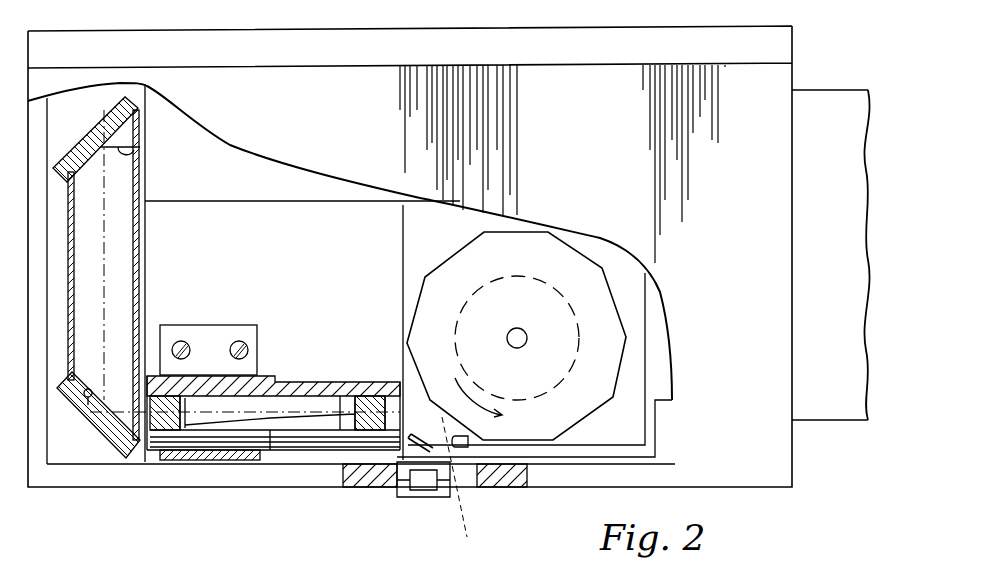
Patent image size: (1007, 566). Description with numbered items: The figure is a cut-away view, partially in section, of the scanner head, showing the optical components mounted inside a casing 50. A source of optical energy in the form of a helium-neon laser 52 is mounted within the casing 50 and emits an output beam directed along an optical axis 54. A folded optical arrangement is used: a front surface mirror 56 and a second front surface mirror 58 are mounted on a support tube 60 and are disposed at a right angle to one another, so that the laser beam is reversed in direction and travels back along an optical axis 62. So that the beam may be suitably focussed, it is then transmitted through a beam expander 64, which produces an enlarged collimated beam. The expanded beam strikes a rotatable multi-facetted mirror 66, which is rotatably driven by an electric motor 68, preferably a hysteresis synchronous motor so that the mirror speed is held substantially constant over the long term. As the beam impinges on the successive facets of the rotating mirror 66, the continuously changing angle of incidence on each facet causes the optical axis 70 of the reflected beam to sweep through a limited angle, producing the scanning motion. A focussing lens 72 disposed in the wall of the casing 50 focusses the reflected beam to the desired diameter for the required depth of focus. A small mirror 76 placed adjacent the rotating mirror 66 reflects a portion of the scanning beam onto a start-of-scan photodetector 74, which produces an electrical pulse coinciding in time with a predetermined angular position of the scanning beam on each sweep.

The casing 50 is at (535, 27).
The helium-neon laser 52 is at (264, 205).
The optical axis 54 is at (140, 152).
The front surface mirror 56 is at (92, 160).
The front surface mirror 58 is at (82, 418).
The support tube 60 is at (137, 251).
The optical axis 62 is at (117, 410).
The beam expander 64 is at (282, 377).
The rotatable multi-facetted mirror 66 is at (602, 268).
The electric motor 68 is at (565, 398).
The optical axis 70 is at (460, 505).
The focussing lens 72 is at (450, 480).
The photodetector 74 is at (467, 447).
The small mirror 76 is at (410, 457).